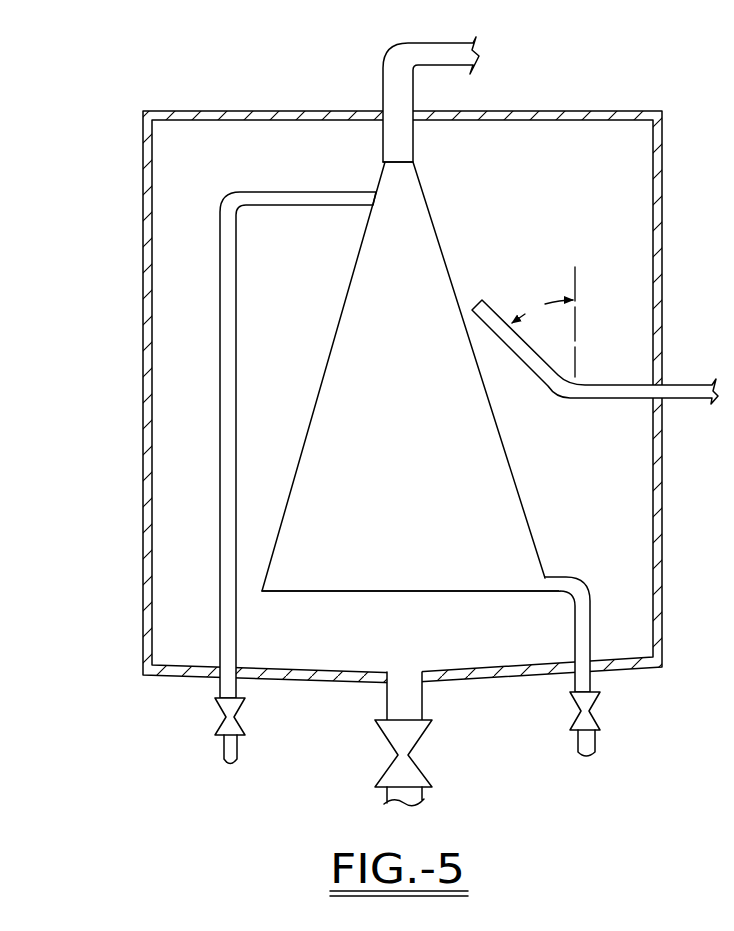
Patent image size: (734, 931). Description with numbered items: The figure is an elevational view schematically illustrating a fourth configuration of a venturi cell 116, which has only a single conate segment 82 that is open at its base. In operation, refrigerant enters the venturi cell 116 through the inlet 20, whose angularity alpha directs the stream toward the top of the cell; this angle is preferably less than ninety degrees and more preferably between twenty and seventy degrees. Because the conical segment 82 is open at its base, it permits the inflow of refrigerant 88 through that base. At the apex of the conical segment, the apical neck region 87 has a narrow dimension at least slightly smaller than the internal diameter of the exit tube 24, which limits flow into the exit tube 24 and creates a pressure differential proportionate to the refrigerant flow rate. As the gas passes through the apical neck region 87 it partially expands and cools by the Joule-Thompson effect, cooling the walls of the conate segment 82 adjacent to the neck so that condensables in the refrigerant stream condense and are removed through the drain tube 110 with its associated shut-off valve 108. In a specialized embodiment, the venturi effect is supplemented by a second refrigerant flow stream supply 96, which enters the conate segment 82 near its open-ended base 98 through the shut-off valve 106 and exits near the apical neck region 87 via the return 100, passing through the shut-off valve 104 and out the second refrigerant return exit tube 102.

The venturi cell 116 is at (138, 151).
The exit tube 24 is at (384, 82).
The apical neck region 87 is at (468, 158).
The return 100 is at (318, 193).
The conate segment 82 is at (338, 328).
The inflow of refrigerant 88 is at (386, 598).
The open-ended base 98 is at (548, 576).
The inlet 20 is at (543, 372).
The shut-off valve 104 is at (220, 714).
The second refrigerant return exit tube 102 is at (224, 750).
The drain tube 110 is at (387, 703).
The shut-off valve 108 is at (381, 748).
The shut-off valve 106 is at (572, 712).
The second refrigerant flow stream supply 96 is at (578, 743).